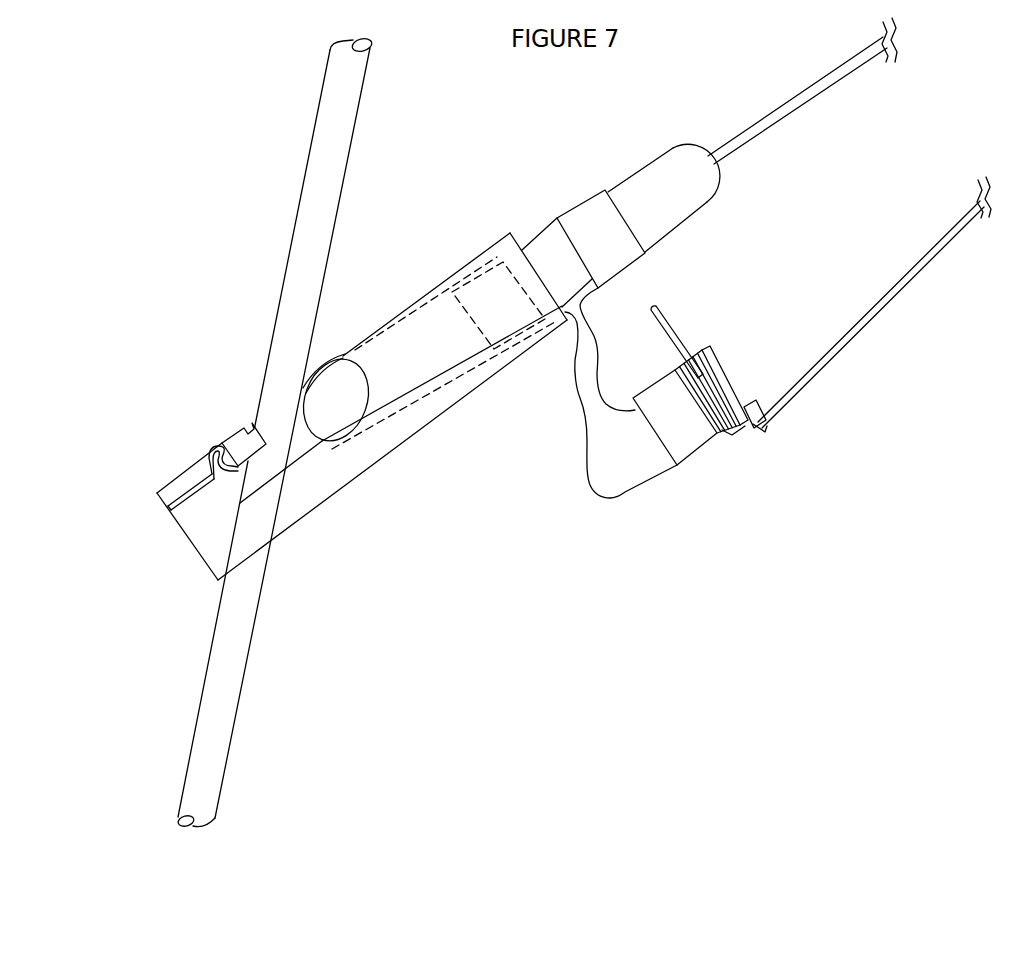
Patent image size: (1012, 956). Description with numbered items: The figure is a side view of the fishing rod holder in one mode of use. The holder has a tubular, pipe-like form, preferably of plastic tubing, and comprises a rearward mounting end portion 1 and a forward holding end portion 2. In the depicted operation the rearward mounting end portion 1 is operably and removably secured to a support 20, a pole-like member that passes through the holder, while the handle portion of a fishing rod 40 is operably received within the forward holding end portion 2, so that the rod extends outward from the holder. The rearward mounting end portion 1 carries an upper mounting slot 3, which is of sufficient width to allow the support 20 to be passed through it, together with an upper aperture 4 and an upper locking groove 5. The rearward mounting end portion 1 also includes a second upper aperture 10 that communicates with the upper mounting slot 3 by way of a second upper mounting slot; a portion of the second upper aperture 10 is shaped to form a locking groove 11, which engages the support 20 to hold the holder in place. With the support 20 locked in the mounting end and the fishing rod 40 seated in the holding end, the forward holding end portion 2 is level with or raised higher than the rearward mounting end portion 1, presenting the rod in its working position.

The rearward mounting end portion 1 is at (162, 466).
The forward holding end portion 2 is at (500, 225).
The upper mounting slot 3 is at (197, 512).
The upper aperture 4 is at (301, 449).
The upper locking groove 5 is at (290, 373).
The second upper aperture 10 is at (216, 438).
The locking groove 11 is at (196, 450).
The support 20 is at (295, 179).
The fishing rod 40 is at (582, 503).